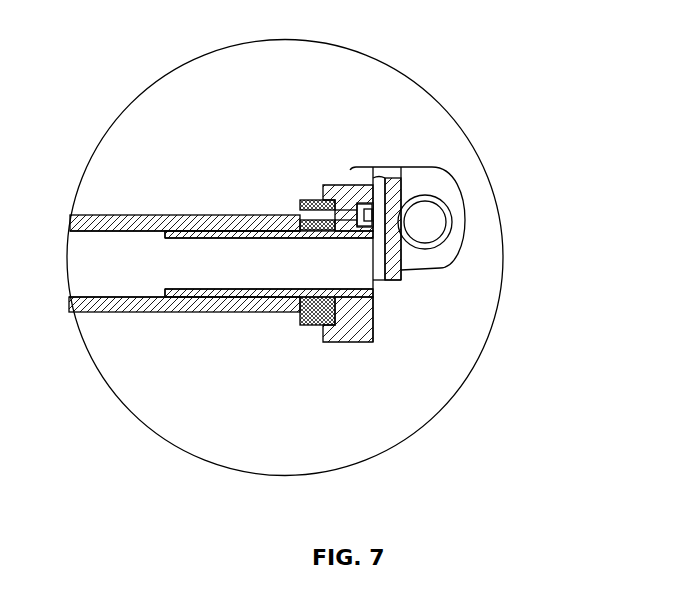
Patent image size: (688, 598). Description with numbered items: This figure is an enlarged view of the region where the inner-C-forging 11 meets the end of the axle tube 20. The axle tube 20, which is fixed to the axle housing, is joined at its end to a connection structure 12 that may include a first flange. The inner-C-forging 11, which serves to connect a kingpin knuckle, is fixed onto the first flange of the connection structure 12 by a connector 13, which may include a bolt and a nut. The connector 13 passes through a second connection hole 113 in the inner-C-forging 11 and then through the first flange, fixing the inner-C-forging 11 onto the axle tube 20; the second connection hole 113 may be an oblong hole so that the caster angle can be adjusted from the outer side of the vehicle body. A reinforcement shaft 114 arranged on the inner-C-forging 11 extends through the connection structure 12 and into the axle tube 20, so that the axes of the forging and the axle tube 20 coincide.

The axle tube 20 is at (157, 215).
The reinforcement shaft 114 is at (225, 311).
The inner-C-forging 11 is at (352, 185).
The connection structure 12 is at (317, 200).
The second connection hole 113 is at (373, 217).
The connector 13 is at (373, 238).